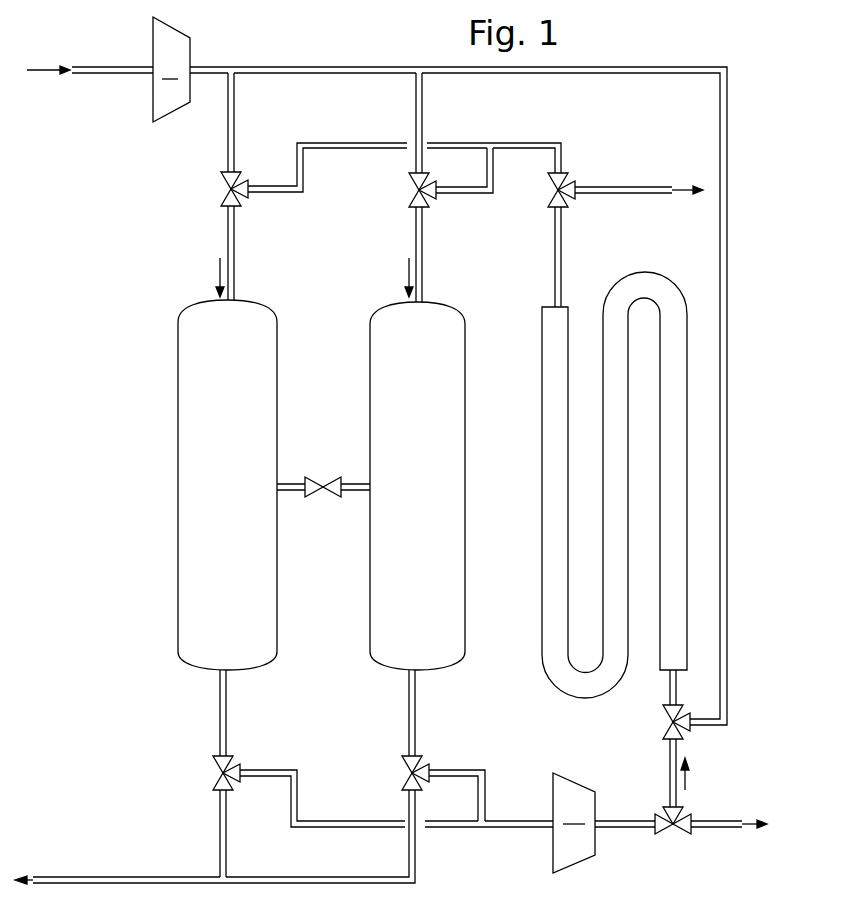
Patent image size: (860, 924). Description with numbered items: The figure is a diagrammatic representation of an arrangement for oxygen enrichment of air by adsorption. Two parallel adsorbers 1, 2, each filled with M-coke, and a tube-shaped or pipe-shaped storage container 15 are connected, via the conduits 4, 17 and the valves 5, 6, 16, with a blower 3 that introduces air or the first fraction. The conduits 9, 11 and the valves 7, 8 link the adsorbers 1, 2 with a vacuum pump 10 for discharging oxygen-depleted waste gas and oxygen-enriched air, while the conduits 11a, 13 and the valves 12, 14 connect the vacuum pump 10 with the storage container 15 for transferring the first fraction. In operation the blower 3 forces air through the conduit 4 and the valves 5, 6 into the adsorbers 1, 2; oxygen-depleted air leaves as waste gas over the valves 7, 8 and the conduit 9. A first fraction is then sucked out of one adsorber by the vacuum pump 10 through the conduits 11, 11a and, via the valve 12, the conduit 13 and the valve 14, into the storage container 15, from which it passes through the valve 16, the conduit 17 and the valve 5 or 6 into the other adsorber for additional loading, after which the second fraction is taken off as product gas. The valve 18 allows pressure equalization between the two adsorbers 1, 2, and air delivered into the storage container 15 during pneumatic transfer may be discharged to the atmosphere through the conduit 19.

The adsorber 1 is at (233, 417).
The adsorber 2 is at (427, 417).
The blower 3 is at (171, 69).
The conduit 4 is at (214, 66).
The valve 5 is at (215, 182).
The valve 6 is at (406, 182).
The valve 7 is at (213, 765).
The valve 8 is at (403, 765).
The conduit 9 is at (196, 883).
The vacuum pump 10 is at (574, 823).
The conduit 11 is at (498, 830).
The conduit 11a is at (628, 830).
The valve 12 is at (673, 835).
The conduit 13 is at (668, 758).
The valve 14 is at (662, 716).
The storage container 15 is at (615, 443).
The valve 16 is at (546, 181).
The conduit 17 is at (512, 143).
The valve 18 is at (323, 477).
The conduit 19 is at (645, 187).